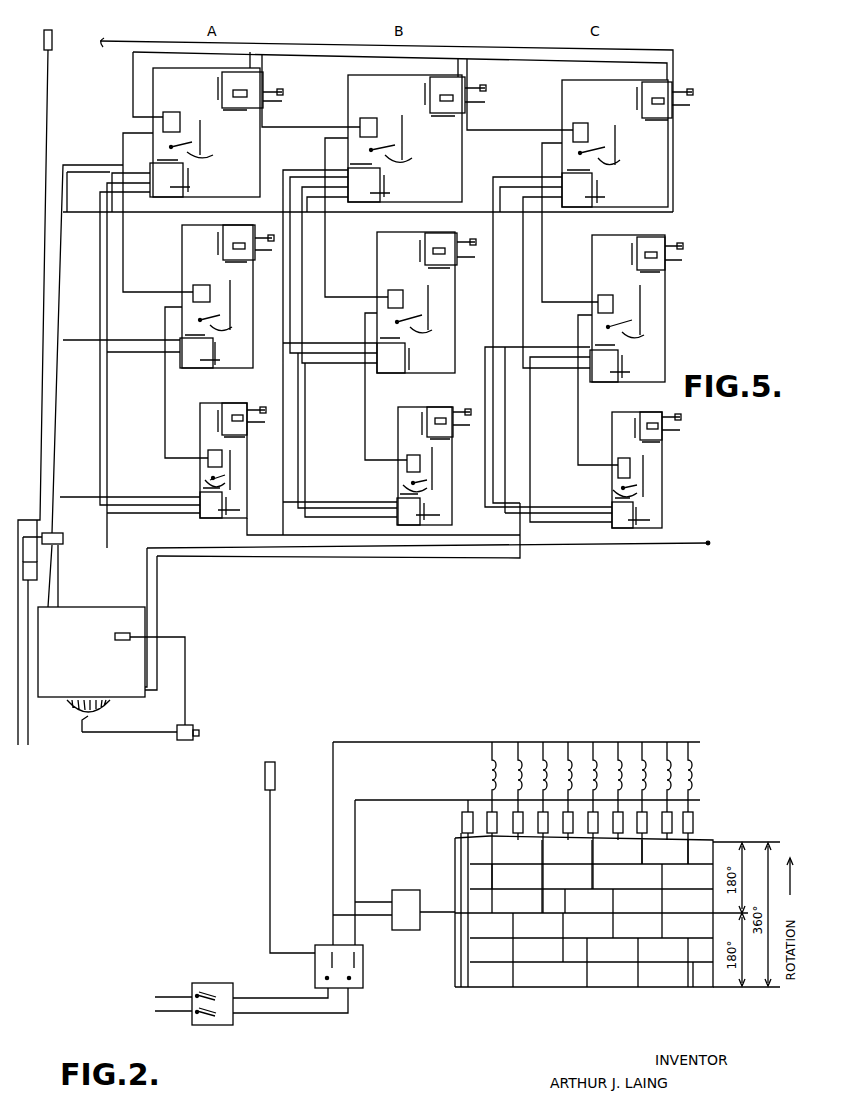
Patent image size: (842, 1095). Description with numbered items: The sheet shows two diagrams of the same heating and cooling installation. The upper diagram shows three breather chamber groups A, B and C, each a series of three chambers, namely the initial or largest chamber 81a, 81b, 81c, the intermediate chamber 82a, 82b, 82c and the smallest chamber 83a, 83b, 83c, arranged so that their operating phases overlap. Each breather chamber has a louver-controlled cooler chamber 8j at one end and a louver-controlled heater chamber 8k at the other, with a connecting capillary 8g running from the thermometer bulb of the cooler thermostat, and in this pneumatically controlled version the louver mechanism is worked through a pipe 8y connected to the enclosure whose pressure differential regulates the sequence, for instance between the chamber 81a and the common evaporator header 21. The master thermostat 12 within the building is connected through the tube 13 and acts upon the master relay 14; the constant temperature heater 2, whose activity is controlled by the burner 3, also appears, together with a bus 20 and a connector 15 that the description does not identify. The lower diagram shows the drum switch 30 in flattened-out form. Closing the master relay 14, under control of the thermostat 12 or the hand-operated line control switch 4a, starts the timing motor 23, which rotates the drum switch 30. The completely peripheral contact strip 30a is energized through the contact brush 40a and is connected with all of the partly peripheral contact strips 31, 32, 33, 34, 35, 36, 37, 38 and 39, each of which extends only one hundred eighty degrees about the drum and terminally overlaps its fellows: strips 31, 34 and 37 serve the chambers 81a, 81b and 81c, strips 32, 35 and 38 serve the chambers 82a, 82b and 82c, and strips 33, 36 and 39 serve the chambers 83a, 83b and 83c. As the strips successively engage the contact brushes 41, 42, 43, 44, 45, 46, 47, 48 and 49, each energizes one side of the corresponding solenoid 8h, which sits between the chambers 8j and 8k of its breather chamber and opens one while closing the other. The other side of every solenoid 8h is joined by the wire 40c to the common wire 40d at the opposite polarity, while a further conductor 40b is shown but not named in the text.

In FIG. 5, the master thermostat 12 is at (52, 33).
In FIG. 2, the master thermostat 12 is at (276, 780).
In FIG. 5, the tube 13 is at (48, 128).
In FIG. 2, the tube 13 is at (272, 865).
In FIG. 5, the common evaporator header 21 is at (150, 38).
In FIG. 5, the return bus 20 is at (702, 547).
In FIG. 5, the pipe 8y is at (133, 92).
In FIG. 5, the louver-controlled cooler chamber 8j is at (215, 82).
In FIG. 5, the connecting capillary 8g is at (615, 488).
In FIG. 5, the louver-controlled heater chamber 8k is at (663, 516).
In FIG. 2, the solenoid 8h is at (711, 775).
In FIG. 5, the breather chamber 81a is at (258, 170).
In FIG. 2, the breather chamber 81a is at (483, 777).
In FIG. 5, the breather chamber 81b is at (405, 138).
In FIG. 2, the breather chamber 81b is at (559, 777).
In FIG. 5, the breather chamber 81c is at (615, 143).
In FIG. 2, the breather chamber 81c is at (633, 777).
In FIG. 5, the breather chamber 82a is at (182, 253).
In FIG. 2, the breather chamber 82a is at (509, 777).
In FIG. 5, the breather chamber 82b is at (385, 262).
In FIG. 2, the breather chamber 82b is at (584, 777).
In FIG. 5, the breather chamber 82c is at (600, 276).
In FIG. 2, the breather chamber 82c is at (658, 777).
In FIG. 5, the breather chamber 83a is at (200, 417).
In FIG. 2, the breather chamber 83a is at (534, 777).
In FIG. 5, the breather chamber 83b is at (405, 431).
In FIG. 2, the breather chamber 83b is at (609, 777).
In FIG. 5, the breather chamber 83c is at (622, 434).
In FIG. 2, the breather chamber 83c is at (679, 777).
In FIG. 5, the connector 15 is at (65, 538).
In FIG. 5, the constant temperature heater 2 is at (97, 607).
In FIG. 5, the burner 3 is at (108, 712).
In FIG. 2, the line control switch 4a is at (233, 1025).
In FIG. 2, the master relay 14 is at (363, 958).
In FIG. 2, the timing motor 23 is at (420, 924).
In FIG. 2, the drum switch 30 is at (525, 989).
In FIG. 2, the completely peripheral contact strip 30a is at (456, 851).
In FIG. 2, the contact strip 31 is at (492, 870).
In FIG. 2, the contact strip 32 is at (513, 944).
In FIG. 2, the contact strip 33 is at (542, 868).
In FIG. 2, the contact strip 34 is at (563, 944).
In FIG. 2, the contact strip 35 is at (588, 980).
In FIG. 2, the contact strip 36 is at (613, 941).
In FIG. 2, the contact strip 37 is at (638, 968).
In FIG. 2, the contact strip 38 is at (662, 903).
In FIG. 2, the contact strip 39 is at (697, 1003).
In FIG. 2, the contact brush 40a is at (461, 822).
In FIG. 2, the supply conductor 40b is at (700, 800).
In FIG. 2, the wire 40c is at (700, 742).
In FIG. 2, the common wire 40d is at (333, 750).
In FIG. 2, the contact terminal 41 is at (497, 822).
In FIG. 2, the contact terminal 42 is at (523, 822).
In FIG. 2, the contact terminal 43 is at (548, 822).
In FIG. 2, the contact terminal 44 is at (573, 822).
In FIG. 2, the contact terminal 45 is at (598, 822).
In FIG. 2, the contact terminal 46 is at (623, 822).
In FIG. 2, the contact terminal 47 is at (647, 822).
In FIG. 2, the contact terminal 48 is at (672, 822).
In FIG. 2, the contact terminal 49 is at (693, 822).